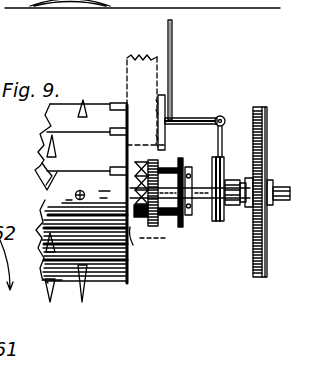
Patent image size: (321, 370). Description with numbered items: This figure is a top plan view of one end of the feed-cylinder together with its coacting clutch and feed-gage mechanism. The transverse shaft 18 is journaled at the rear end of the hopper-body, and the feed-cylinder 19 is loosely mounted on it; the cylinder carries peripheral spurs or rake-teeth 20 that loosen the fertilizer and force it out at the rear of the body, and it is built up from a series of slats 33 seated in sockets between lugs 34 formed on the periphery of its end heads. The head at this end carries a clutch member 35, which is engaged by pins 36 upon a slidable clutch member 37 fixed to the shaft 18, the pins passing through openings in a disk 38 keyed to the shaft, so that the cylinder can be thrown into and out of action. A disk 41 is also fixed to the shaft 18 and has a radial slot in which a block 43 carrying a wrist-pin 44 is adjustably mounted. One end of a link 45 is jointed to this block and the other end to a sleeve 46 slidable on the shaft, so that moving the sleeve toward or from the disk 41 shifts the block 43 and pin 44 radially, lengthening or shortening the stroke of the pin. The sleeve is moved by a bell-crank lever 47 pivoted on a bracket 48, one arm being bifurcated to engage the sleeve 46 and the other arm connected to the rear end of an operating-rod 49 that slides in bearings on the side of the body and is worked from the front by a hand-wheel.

The transverse shaft 18 is at (196, 215).
The feed-cylinder 19 is at (42, 167).
The rake-teeth 20 is at (48, 122).
The slats 33 is at (52, 180).
The lugs 34 is at (112, 132).
The clutch member 35 is at (134, 228).
The pins 36 is at (170, 215).
The slidable clutch member 37 is at (185, 170).
The disk 38 is at (150, 158).
The disk 41 is at (267, 138).
The block 43 is at (268, 182).
The wrist-pin 44 is at (282, 200).
The link 45 is at (235, 200).
The sleeve 46 is at (208, 224).
The bell-crank lever 47 is at (188, 118).
The bracket 48 is at (224, 119).
The operating-rod 49 is at (173, 33).